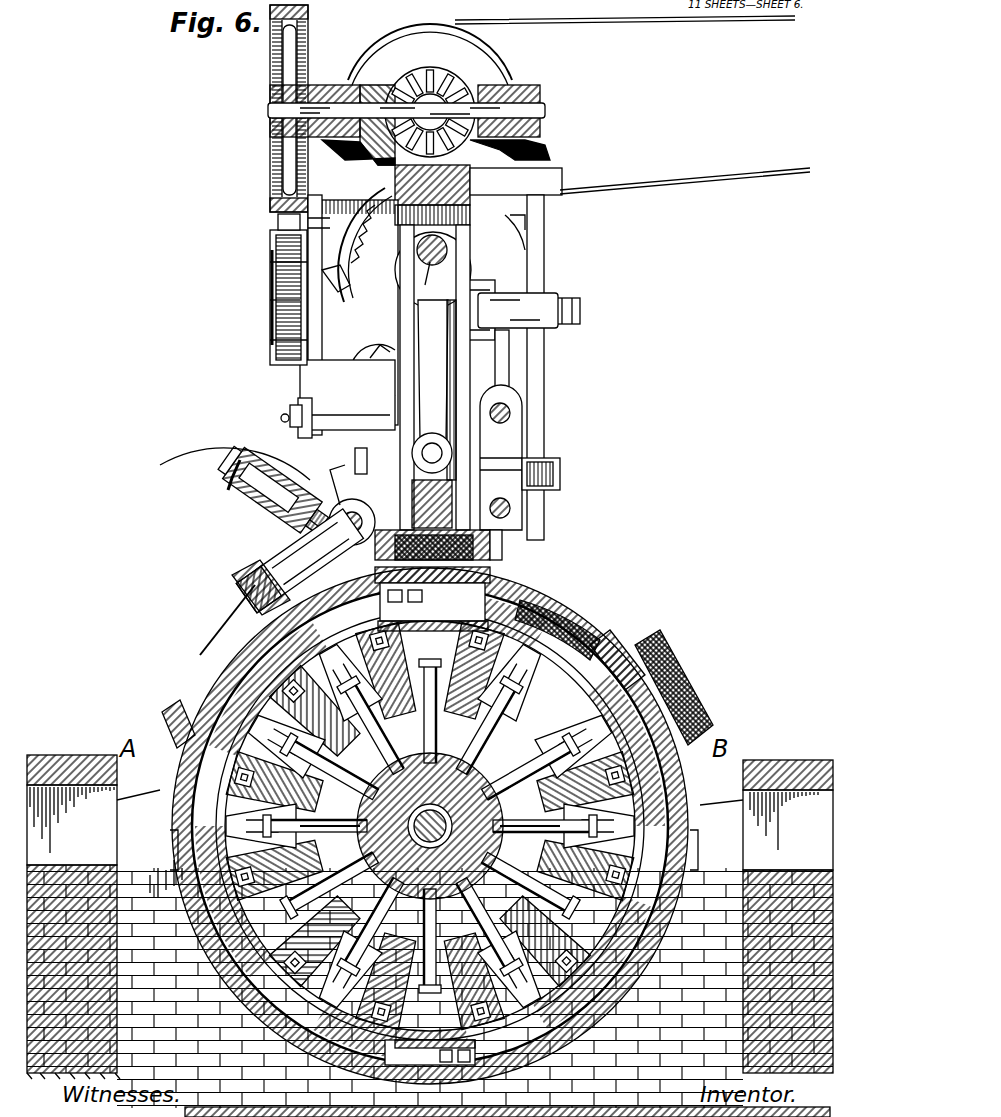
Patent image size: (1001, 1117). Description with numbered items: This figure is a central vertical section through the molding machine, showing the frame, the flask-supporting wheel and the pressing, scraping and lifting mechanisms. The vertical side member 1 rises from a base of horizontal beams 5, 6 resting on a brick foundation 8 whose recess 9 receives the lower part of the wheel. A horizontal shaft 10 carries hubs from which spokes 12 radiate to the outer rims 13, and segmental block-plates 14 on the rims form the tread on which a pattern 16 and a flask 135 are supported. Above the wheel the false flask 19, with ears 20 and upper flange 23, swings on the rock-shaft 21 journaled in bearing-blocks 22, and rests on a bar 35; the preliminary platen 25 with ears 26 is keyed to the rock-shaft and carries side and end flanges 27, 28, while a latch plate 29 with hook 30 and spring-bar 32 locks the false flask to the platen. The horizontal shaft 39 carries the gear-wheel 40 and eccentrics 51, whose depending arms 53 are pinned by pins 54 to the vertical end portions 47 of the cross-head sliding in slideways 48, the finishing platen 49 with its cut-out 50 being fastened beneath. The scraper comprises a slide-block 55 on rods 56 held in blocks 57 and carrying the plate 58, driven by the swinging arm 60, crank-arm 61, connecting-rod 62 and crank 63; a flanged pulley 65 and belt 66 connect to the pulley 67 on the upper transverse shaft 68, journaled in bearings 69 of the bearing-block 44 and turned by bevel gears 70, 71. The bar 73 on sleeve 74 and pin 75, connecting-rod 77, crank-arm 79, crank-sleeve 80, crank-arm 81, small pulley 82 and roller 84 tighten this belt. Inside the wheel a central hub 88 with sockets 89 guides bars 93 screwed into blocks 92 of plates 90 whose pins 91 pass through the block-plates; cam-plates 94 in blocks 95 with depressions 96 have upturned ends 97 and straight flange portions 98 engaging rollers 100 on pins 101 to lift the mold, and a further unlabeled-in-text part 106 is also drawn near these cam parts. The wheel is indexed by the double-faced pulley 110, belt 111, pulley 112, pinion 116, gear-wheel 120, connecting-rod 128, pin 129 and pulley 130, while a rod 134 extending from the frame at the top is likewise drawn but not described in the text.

The vertical side member 1 is at (462, 222).
The horizontal beam 5 is at (140, 800).
The horizontal beam 6 is at (80, 760).
The foundation 8 is at (88, 880).
The depression or recess 9 is at (712, 905).
The horizontal shaft 10 is at (470, 775).
The spokes 12 is at (442, 853).
The outer rims or rings 13 is at (612, 645).
The segmental block-plates 14 is at (700, 778).
The pattern 16 is at (716, 800).
The false flask or sand-box 19 is at (235, 590).
The projecting ears 20 is at (355, 512).
The rock-shaft 21 is at (330, 530).
The bearing-blocks 22 is at (355, 460).
The upwardly-extending flange 23 is at (250, 585).
The platen 25 is at (265, 470).
The lateral ears 26 is at (343, 485).
The side flanges 27 is at (226, 480).
The end flanges 28 is at (245, 500).
The latch plate 29 is at (245, 478).
The hook 30 is at (230, 464).
The spring-bar 32 is at (321, 488).
The bar 35 is at (338, 540).
The horizontal shaft 39 is at (433, 270).
The gear-wheel 40 is at (520, 278).
The bearing-block 44 is at (470, 95).
The vertical end portions 47 is at (437, 390).
The slideways 48 is at (460, 366).
The platen 49 is at (495, 525).
The cut-out 50 is at (432, 599).
The eccentrics 51 is at (432, 295).
The depending arms 53 is at (435, 377).
The pins 54 is at (442, 455).
The slide-block 55 is at (525, 440).
The horizontally-extending rods 56 is at (510, 408).
The blocks 57 is at (522, 368).
The plate 58 is at (505, 542).
The swinging arm 60 is at (545, 346).
The crank-arm 61 is at (562, 470).
The connecting-rod 62 is at (425, 245).
The crank 63 is at (560, 296).
The flanged pulley 65 is at (270, 338).
The belt 66 is at (278, 225).
The pulley 67 is at (270, 52).
The upper transverse shaft 68 is at (268, 108).
The bearings 69 is at (335, 85).
The bevel gear-wheel 70 is at (372, 82).
The bevel gear-wheel 71 is at (430, 97).
The bar 73 is at (300, 395).
The sleeve 74 is at (333, 415).
The pin 75 is at (285, 412).
The connecting-rod 77 is at (348, 195).
The crank-arm 79 is at (280, 238).
The crank-sleeve 80 is at (341, 287).
The crank-arm 81 is at (268, 290).
The small flanged pulley 82 is at (268, 270).
The roller 84 is at (365, 200).
The central hub 88 is at (368, 759).
The radial sockets 89 is at (430, 829).
The rectangular plates 90 is at (720, 716).
The pins 91 is at (642, 578).
The block 92 is at (429, 825).
The bar 93 is at (385, 814).
The sliding cam-plates 94 is at (405, 839).
The blocks 95 is at (443, 875).
The depression 96 is at (419, 824).
The ends 97 is at (430, 1052).
The straight portions 98 is at (406, 779).
The roller 100 is at (428, 843).
The pin 101 is at (451, 782).
The connector 106 is at (578, 774).
The double-faced pulley 110 is at (430, 49).
The belt 111 is at (545, 225).
The pulley 112 is at (548, 585).
The pinion 116 is at (455, 485).
The gear-wheel 120 is at (361, 746).
The connecting-rod 128 is at (385, 368).
The pin 129 is at (358, 362).
The pulley 130 is at (378, 383).
The rod 134 is at (658, 22).
The flask 135 is at (672, 625).